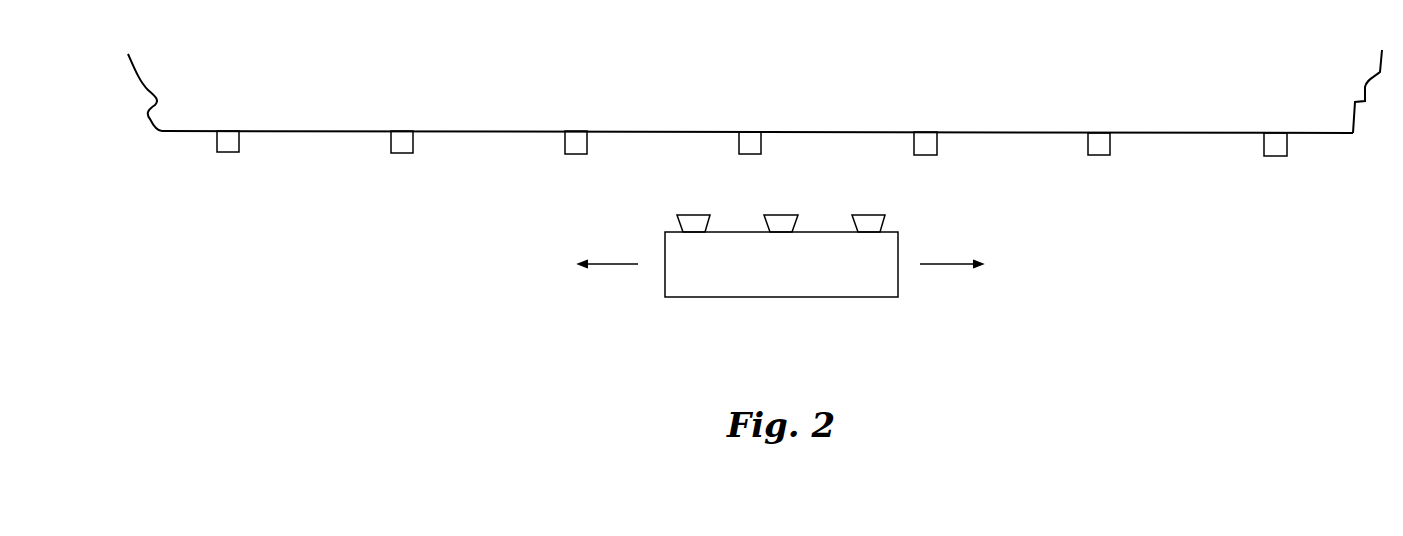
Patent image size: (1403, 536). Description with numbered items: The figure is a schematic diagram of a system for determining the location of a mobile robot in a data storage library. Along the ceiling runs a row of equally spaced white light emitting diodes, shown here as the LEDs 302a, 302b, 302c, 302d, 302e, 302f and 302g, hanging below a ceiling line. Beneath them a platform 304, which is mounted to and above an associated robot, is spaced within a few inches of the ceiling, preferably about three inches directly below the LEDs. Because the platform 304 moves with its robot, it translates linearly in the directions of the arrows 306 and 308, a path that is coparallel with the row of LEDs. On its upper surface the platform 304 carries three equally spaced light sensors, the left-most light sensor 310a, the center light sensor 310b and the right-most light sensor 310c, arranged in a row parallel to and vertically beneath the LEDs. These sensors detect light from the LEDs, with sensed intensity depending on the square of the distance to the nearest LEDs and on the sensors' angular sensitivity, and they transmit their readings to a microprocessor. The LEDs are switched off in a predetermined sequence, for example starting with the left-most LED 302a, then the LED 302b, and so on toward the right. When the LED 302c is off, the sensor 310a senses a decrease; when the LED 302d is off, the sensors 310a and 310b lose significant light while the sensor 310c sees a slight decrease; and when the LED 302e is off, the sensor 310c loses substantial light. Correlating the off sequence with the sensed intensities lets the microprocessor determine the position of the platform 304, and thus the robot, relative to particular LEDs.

The white LED 302a is at (228, 152).
The white LED 302b is at (405, 153).
The white LED 302c is at (577, 154).
The white LED 302d is at (754, 154).
The white LED 302e is at (929, 155).
The white LED 302f is at (1102, 155).
The white LED 302g is at (1276, 156).
The platform 304 is at (781, 264).
The arrow 306 is at (605, 264).
The arrow 308 is at (960, 264).
The light sensor 310a is at (681, 216).
The light sensor 310b is at (779, 215).
The light sensor 310c is at (871, 216).